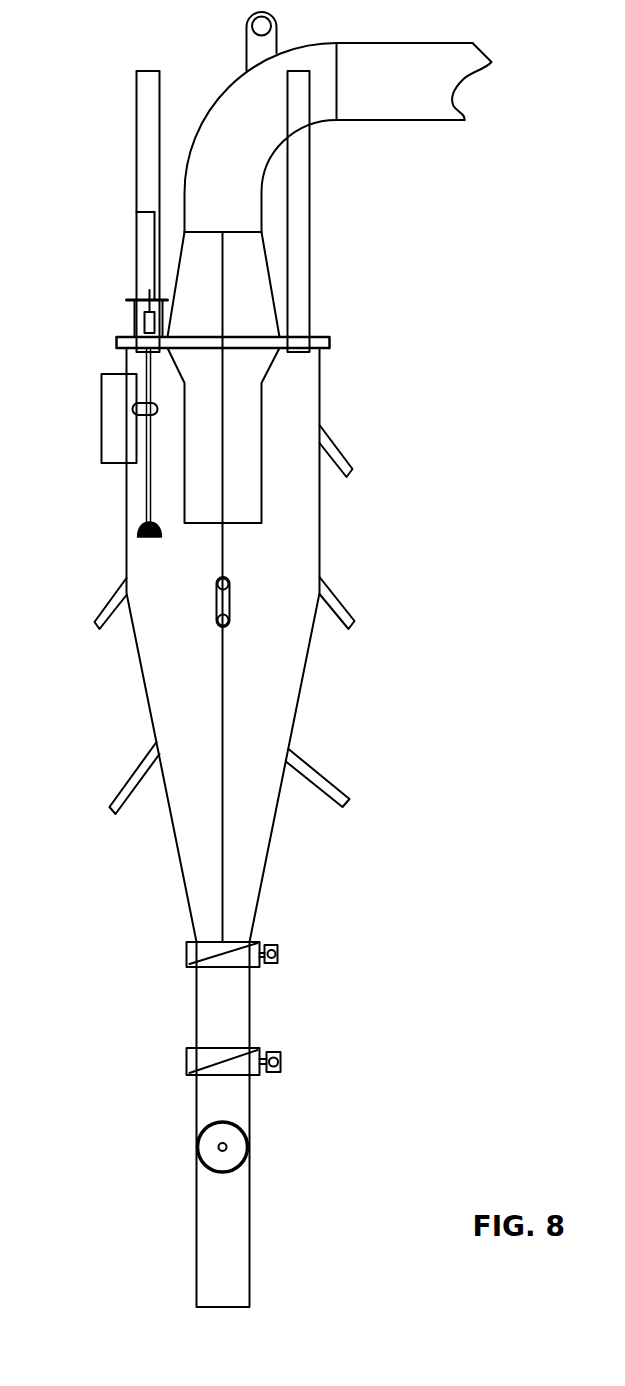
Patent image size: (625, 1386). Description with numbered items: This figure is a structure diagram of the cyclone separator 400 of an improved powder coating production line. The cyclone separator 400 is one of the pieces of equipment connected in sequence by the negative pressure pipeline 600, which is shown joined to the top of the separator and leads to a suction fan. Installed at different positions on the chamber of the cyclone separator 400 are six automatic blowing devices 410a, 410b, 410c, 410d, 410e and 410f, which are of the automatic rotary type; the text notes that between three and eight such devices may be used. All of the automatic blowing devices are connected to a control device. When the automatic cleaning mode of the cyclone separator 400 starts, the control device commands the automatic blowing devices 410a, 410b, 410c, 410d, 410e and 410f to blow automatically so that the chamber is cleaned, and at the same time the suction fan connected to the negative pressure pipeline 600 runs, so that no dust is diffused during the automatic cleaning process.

The negative pressure pipeline 600 is at (387, 53).
The cyclone separator 400 is at (292, 677).
The automatic blowing device 410a is at (352, 472).
The automatic blowing device 410b is at (355, 628).
The automatic blowing device 410c is at (350, 805).
The automatic blowing device 410d is at (112, 817).
The automatic blowing device 410e is at (88, 633).
The automatic blowing device 410f is at (148, 477).